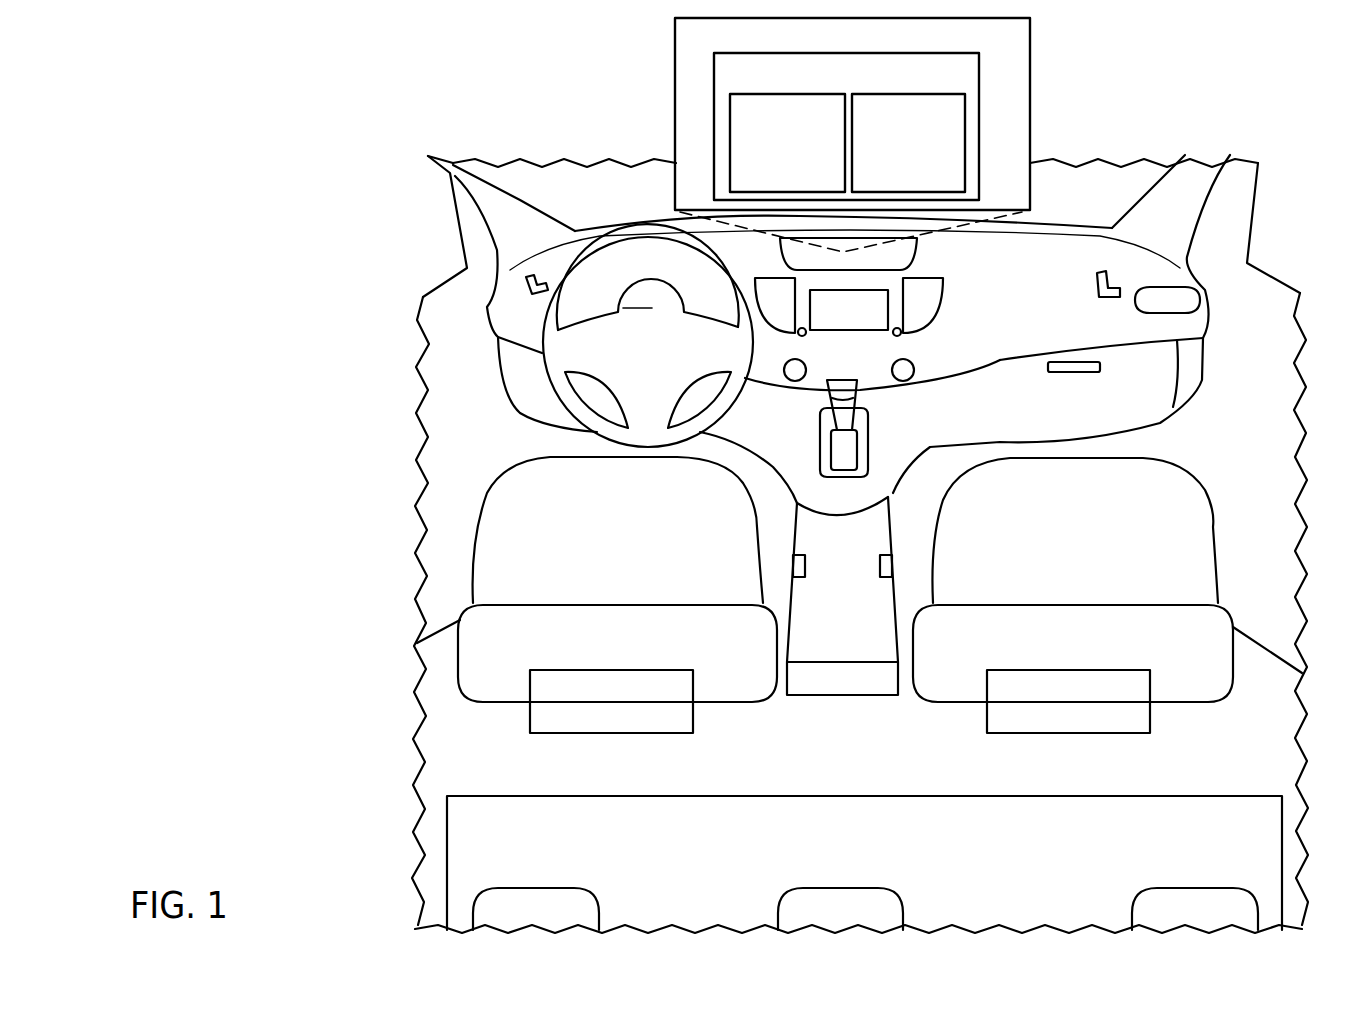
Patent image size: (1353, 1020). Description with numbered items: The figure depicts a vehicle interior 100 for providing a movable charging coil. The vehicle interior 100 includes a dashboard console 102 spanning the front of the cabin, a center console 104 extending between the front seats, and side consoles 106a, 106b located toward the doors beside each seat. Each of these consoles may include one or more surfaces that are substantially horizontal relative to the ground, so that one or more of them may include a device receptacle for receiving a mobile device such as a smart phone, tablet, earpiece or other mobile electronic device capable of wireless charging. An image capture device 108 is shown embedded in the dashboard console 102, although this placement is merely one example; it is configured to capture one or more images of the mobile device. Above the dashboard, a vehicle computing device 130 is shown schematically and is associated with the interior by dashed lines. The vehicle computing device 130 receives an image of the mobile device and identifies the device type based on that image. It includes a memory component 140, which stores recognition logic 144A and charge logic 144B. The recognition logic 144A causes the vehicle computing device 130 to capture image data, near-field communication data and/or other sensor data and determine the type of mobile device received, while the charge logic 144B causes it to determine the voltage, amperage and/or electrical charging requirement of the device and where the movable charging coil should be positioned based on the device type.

The vehicle interior 100 is at (815, 544).
The dashboard console 102 is at (841, 317).
The center console 104 is at (862, 614).
The side console 106a is at (602, 595).
The side console 106b is at (1102, 595).
The image capture device 108 is at (907, 383).
The vehicle computing device 130 is at (1024, 47).
The memory component 140 is at (968, 85).
The recognition logic 144A is at (816, 183).
The charge logic 144B is at (937, 183).